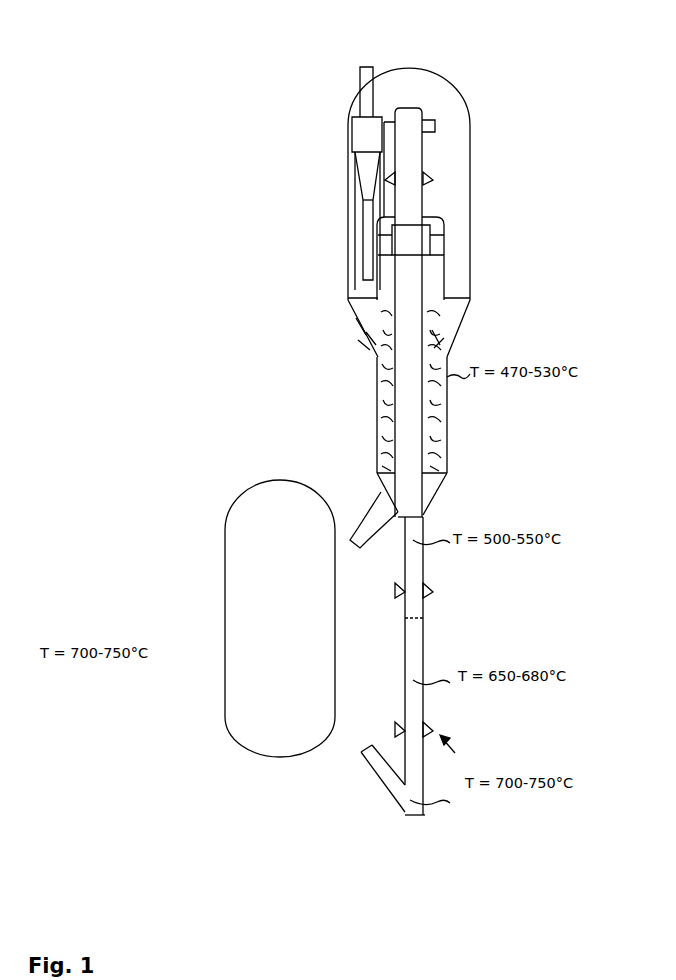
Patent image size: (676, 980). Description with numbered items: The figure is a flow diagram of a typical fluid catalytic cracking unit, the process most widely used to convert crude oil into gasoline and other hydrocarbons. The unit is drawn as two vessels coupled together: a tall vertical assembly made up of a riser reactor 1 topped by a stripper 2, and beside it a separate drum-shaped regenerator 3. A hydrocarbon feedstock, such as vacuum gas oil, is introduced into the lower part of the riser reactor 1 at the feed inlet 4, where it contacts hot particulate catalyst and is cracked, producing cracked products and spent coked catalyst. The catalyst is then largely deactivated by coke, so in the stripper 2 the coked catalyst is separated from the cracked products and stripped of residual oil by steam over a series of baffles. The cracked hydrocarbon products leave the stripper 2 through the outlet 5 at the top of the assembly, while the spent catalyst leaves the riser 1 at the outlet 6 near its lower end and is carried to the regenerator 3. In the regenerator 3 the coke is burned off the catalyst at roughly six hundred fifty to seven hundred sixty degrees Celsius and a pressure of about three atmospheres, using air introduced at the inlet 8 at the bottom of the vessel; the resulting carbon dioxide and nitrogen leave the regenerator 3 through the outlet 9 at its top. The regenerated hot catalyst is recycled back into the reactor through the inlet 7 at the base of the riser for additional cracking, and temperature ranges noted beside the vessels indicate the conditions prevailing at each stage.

The riser reactor 1 is at (430, 445).
The stripper 2 is at (443, 199).
The regenerator 3 is at (225, 650).
The hydrocarbon feedstock inlet 4 is at (505, 618).
The cracked hydrocarbon products outlet 5 is at (365, 66).
The spent catalyst outlet 6 is at (352, 545).
The recycled catalyst inlet 7 is at (343, 718).
The air inlet 8 is at (283, 756).
The regenerator gas outlet 9 is at (279, 413).